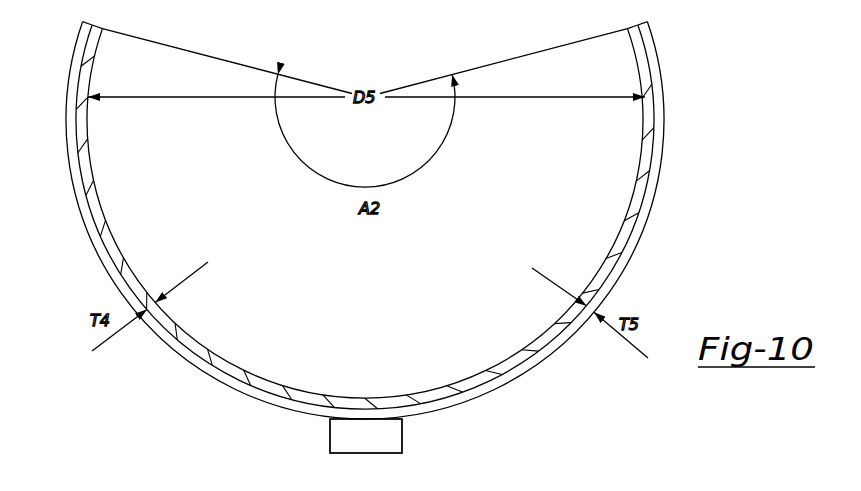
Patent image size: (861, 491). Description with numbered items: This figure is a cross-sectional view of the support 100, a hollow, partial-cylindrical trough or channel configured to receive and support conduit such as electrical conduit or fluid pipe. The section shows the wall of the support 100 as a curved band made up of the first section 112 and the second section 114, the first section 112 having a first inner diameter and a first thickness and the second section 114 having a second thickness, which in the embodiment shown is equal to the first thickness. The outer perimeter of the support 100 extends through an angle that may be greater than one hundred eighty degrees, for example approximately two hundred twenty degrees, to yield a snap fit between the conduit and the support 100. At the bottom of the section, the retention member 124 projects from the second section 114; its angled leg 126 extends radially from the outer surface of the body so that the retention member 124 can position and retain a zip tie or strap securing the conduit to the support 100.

The support 100 is at (366, 214).
The first section 112 is at (105, 220).
The second section 114 is at (76, 193).
The retention member 124 is at (328, 438).
The angled leg 126 is at (383, 448).